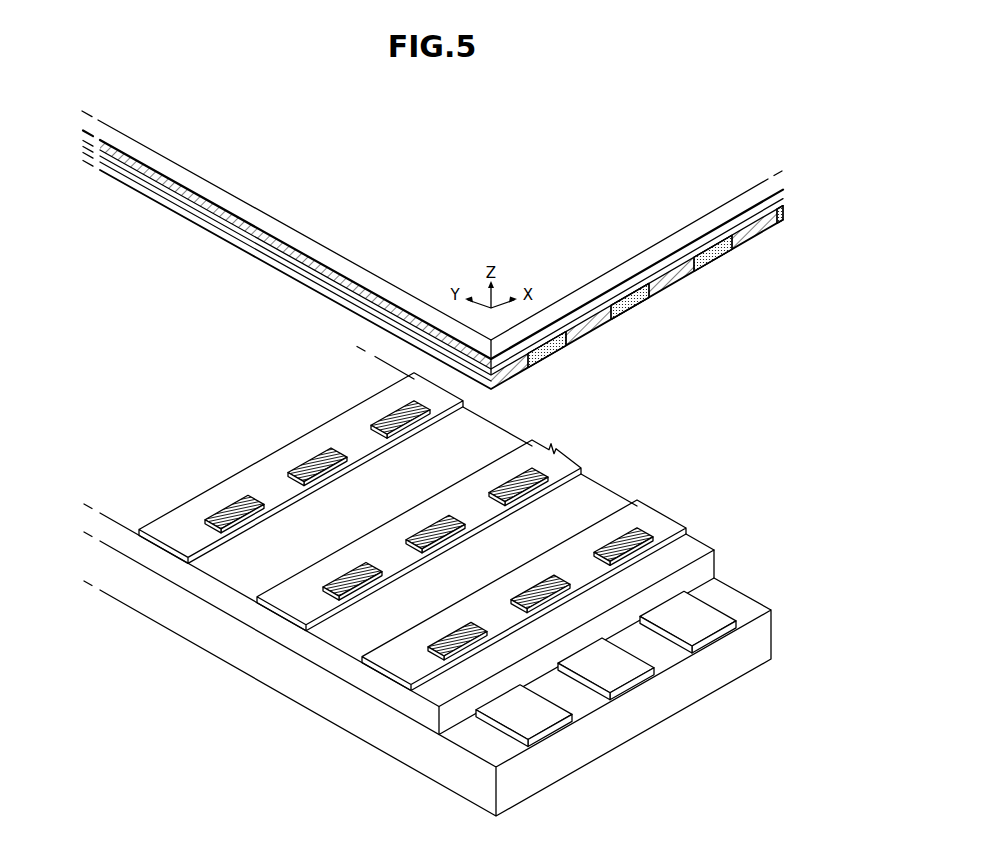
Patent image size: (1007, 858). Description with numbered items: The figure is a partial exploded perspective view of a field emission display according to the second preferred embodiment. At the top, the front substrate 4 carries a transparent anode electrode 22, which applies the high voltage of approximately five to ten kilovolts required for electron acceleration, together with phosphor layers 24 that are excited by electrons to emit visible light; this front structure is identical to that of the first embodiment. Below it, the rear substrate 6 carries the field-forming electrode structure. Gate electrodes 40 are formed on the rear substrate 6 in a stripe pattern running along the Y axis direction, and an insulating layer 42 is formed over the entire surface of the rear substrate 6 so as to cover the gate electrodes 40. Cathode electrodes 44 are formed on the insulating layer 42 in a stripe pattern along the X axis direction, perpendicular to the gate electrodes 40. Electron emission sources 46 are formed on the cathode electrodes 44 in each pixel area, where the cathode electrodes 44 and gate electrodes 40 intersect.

The front substrate 4 is at (163, 170).
The transparent anode electrode 22 is at (312, 273).
The phosphor layers 24 is at (630, 305).
The rear substrate 6 is at (597, 748).
The gate electrodes 40 is at (634, 672).
The insulating layer 42 is at (689, 547).
The cathode electrodes 44 is at (403, 651).
The electron emission sources 46 is at (373, 411).